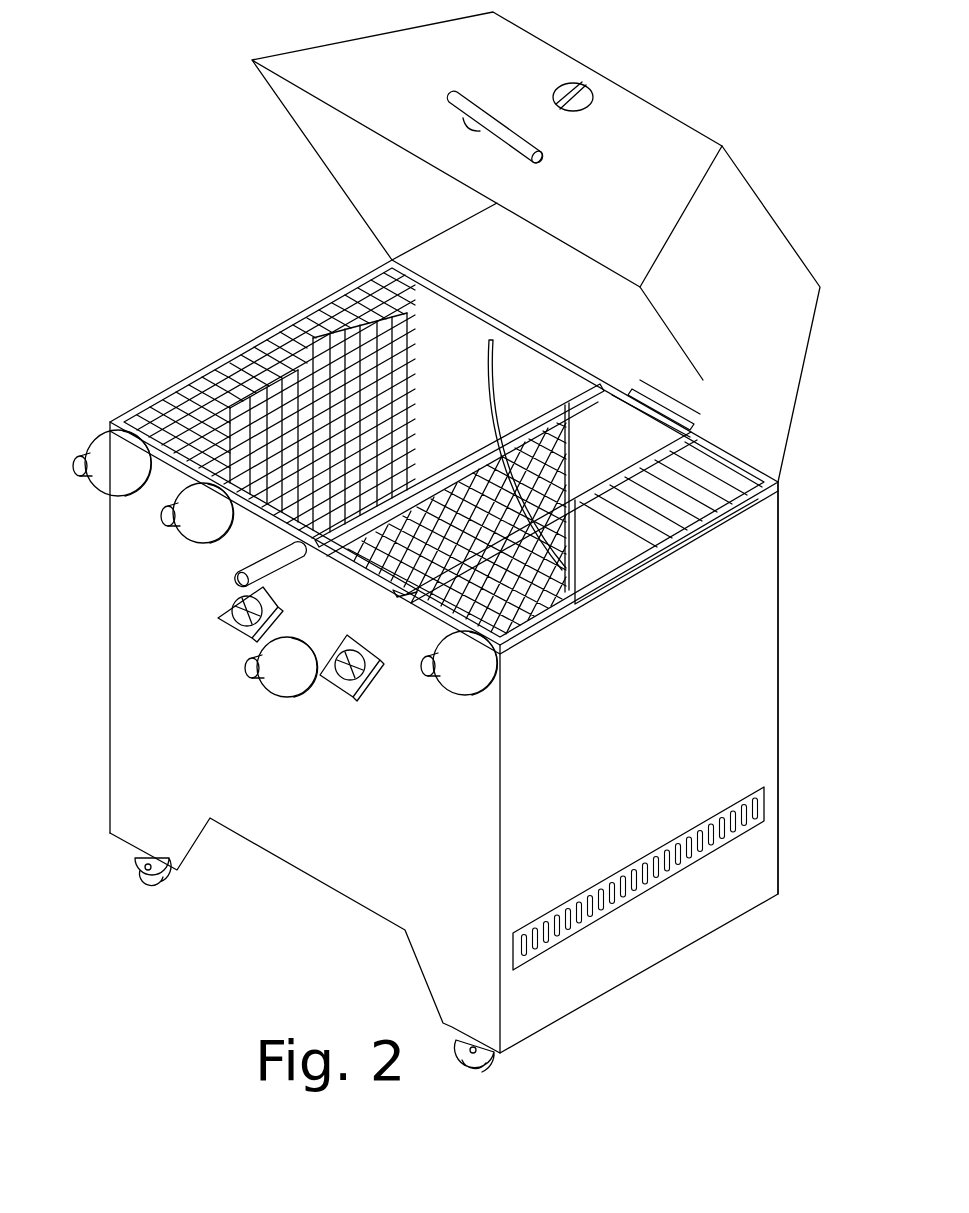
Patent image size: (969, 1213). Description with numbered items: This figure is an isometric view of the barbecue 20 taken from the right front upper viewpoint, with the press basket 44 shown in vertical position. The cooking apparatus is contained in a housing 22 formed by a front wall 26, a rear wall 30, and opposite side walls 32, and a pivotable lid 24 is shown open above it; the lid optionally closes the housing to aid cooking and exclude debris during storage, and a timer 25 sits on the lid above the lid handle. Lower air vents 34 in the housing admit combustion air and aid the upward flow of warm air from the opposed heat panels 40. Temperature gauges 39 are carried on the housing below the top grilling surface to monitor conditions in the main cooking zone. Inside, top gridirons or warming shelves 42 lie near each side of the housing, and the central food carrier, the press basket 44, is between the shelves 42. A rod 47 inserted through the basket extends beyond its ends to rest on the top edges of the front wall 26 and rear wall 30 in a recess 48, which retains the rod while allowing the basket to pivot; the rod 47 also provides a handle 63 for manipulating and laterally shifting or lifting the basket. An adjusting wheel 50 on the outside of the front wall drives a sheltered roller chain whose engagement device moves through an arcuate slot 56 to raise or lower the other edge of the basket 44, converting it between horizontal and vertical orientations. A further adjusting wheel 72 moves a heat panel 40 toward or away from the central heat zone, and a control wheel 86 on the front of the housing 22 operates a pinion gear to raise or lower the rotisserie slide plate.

The barbecue 20 is at (157, 212).
The housing 22 is at (768, 604).
The pivotable lid 24 is at (741, 200).
The timer 25 is at (583, 88).
The front wall 26 is at (118, 720).
The rear wall 30 is at (558, 336).
The side walls 32 is at (762, 758).
The lower air vents 34 is at (745, 830).
The temperature gauges 39 is at (245, 640).
The heat panels 40 is at (395, 425).
The top gridirons or warming shelves 42 is at (340, 290).
The press basket 44 is at (600, 392).
The rod 47 is at (575, 380).
The recess 48 is at (660, 410).
The adjusting wheel 50 is at (190, 540).
The arcuate slot 56 is at (494, 335).
The handle 63 is at (240, 598).
The adjusting wheel 72 is at (100, 445).
The control wheel 86 is at (280, 690).